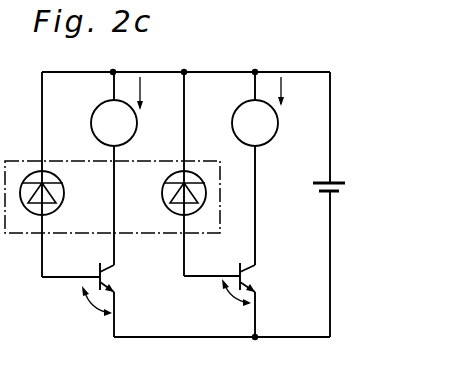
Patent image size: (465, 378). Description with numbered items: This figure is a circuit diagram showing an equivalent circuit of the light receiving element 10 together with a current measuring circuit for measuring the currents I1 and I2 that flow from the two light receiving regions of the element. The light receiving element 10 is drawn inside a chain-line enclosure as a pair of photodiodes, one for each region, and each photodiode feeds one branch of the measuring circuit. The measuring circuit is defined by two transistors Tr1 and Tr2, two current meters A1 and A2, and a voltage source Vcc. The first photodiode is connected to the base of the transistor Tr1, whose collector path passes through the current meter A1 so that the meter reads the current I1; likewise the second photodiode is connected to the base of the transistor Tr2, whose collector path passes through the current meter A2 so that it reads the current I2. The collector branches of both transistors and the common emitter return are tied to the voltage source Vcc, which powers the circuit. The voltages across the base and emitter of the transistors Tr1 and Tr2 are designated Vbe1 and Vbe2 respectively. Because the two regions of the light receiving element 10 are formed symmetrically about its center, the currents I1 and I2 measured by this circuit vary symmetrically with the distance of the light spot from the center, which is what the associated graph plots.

The light receiving element 10 is at (25, 233).
The first transistor Tr1 is at (97, 300).
The second transistor Tr2 is at (238, 300).
The first current meter A1 is at (114, 168).
The second current meter A2 is at (255, 168).
The first current I1 is at (149, 97).
The second current I2 is at (290, 95).
The voltage source Vcc is at (342, 174).
The base-emitter voltage of first transistor Vbe1 is at (73, 311).
The base-emitter voltage of second transistor Vbe2 is at (218, 306).